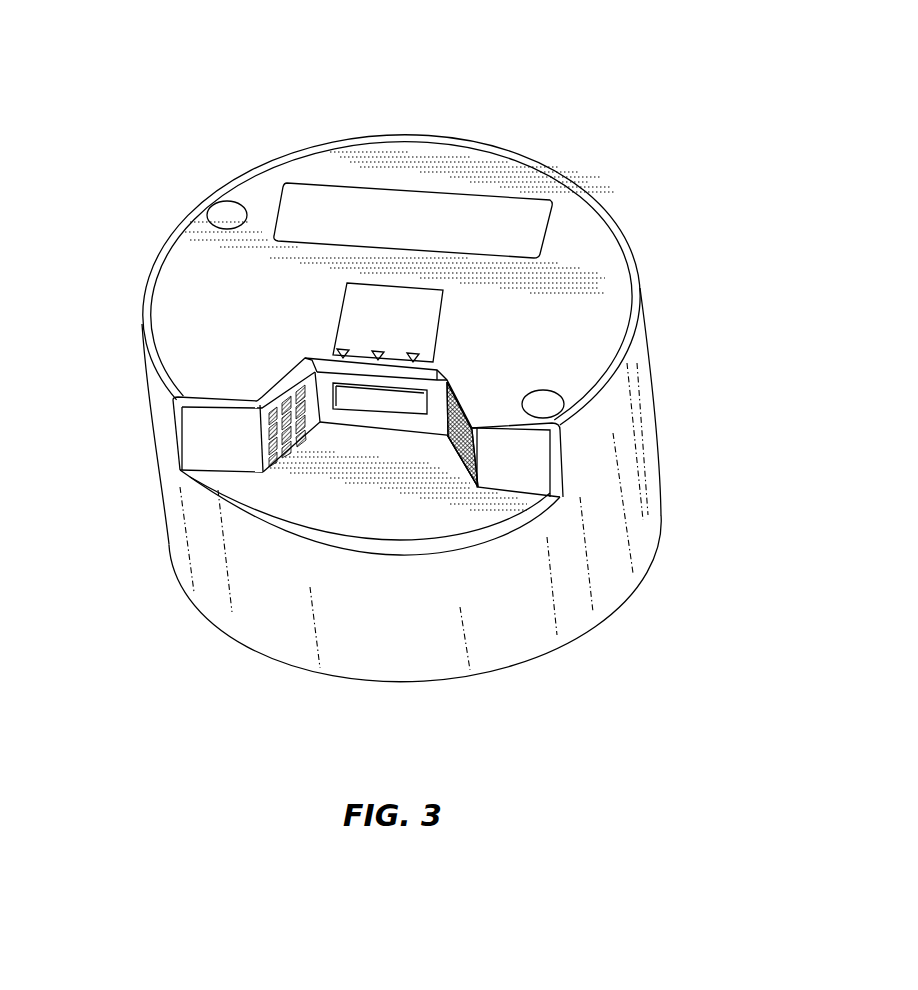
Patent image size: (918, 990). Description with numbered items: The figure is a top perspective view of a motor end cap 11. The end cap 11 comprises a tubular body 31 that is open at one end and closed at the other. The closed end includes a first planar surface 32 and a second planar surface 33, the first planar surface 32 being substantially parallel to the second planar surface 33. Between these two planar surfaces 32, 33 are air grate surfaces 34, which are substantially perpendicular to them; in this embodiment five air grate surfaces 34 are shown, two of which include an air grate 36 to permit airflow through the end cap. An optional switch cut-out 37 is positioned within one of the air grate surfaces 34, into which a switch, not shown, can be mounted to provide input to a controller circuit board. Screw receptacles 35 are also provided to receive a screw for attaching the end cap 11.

The end cap 11 is at (617, 100).
The tubular body 31 is at (633, 403).
The first planar surface 32 is at (582, 248).
The second planar surface 33 is at (460, 507).
The air grate surface 34 is at (460, 397).
The screw receptacle 35 is at (225, 208).
The air grate 36 is at (303, 447).
The switch cut-out 37 is at (380, 398).